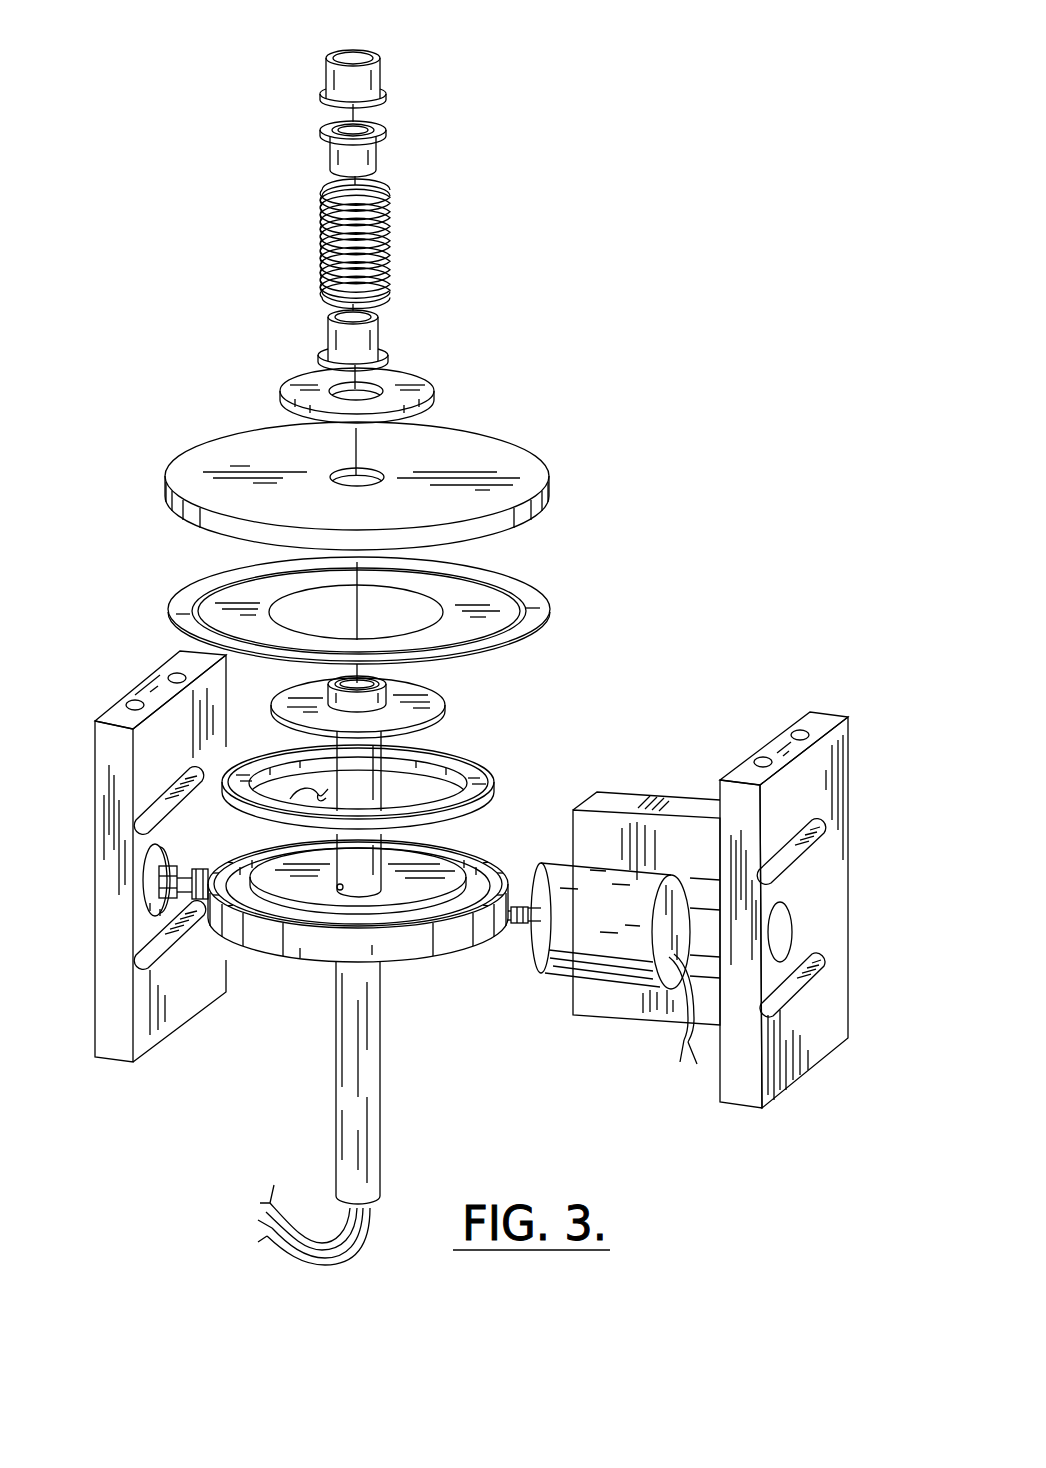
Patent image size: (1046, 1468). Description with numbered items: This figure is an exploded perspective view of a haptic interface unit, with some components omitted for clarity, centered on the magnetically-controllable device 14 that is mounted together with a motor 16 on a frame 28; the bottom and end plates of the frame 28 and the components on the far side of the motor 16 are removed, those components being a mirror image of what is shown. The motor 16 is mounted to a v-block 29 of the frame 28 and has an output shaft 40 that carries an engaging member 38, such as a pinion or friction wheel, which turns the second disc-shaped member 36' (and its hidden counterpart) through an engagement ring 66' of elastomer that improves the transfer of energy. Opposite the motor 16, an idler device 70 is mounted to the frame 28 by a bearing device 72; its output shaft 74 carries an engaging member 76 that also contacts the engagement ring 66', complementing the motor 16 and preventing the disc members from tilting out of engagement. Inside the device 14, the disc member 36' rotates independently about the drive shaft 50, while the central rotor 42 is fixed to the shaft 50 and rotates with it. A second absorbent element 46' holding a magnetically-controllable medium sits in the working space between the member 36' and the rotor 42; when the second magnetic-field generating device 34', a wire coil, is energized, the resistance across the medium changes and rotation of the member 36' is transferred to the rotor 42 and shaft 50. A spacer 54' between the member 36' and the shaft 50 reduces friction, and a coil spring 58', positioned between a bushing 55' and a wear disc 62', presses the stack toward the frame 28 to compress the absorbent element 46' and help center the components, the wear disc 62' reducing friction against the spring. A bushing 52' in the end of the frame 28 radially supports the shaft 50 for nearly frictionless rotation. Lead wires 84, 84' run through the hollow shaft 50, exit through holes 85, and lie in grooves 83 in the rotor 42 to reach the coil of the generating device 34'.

The magnetically-controllable device 14 is at (576, 348).
The motor 16 is at (590, 902).
The frame 28 is at (864, 684).
The mounting block 29 is at (682, 840).
The second magnetic-field generating device 34' is at (386, 774).
The second disc-shaped member 36' is at (385, 486).
The engaging member 38 is at (520, 925).
The output shaft 40 is at (541, 966).
The central rotor 42 is at (290, 949).
The second absorbent element 46' is at (376, 591).
The drive shaft 50 is at (373, 1019).
The bushing 52' is at (386, 71).
The spacer 54' is at (390, 696).
The bushing 55' is at (385, 243).
The coil spring 58' is at (391, 244).
The wear disc 62' is at (385, 379).
The engagement ring 66' is at (392, 609).
The idler device 70 is at (130, 903).
The bearing device 72 is at (152, 866).
The output shaft 74 is at (185, 877).
The engaging member 76 is at (200, 957).
The groove 83 is at (306, 962).
The lead wire 84 is at (278, 1170).
The lead wire 84' is at (279, 998).
The hole 85 is at (345, 885).